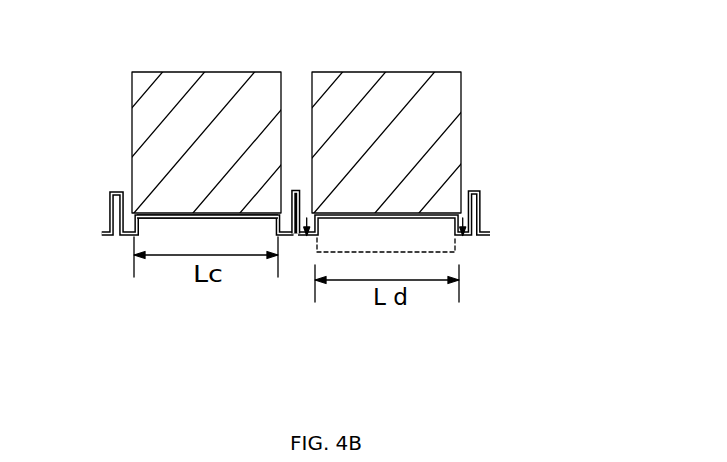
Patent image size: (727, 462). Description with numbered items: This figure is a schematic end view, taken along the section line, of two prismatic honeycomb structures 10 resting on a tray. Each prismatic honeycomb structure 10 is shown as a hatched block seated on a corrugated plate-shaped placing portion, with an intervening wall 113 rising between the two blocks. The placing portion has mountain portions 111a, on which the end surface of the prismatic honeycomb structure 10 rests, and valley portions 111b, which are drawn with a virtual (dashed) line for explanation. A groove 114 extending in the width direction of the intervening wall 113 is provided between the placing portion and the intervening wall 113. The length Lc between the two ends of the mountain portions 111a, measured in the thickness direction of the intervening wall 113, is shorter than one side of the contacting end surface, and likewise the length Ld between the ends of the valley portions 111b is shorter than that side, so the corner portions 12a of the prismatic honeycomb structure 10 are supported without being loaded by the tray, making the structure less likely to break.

The prismatic honeycomb structure 10 is at (463, 127).
The corner portion 12a is at (462, 202).
The mountain portion 111a is at (163, 214).
The valley portion 111b is at (352, 255).
The intervening wall 113 is at (295, 191).
The groove 114 is at (304, 238).